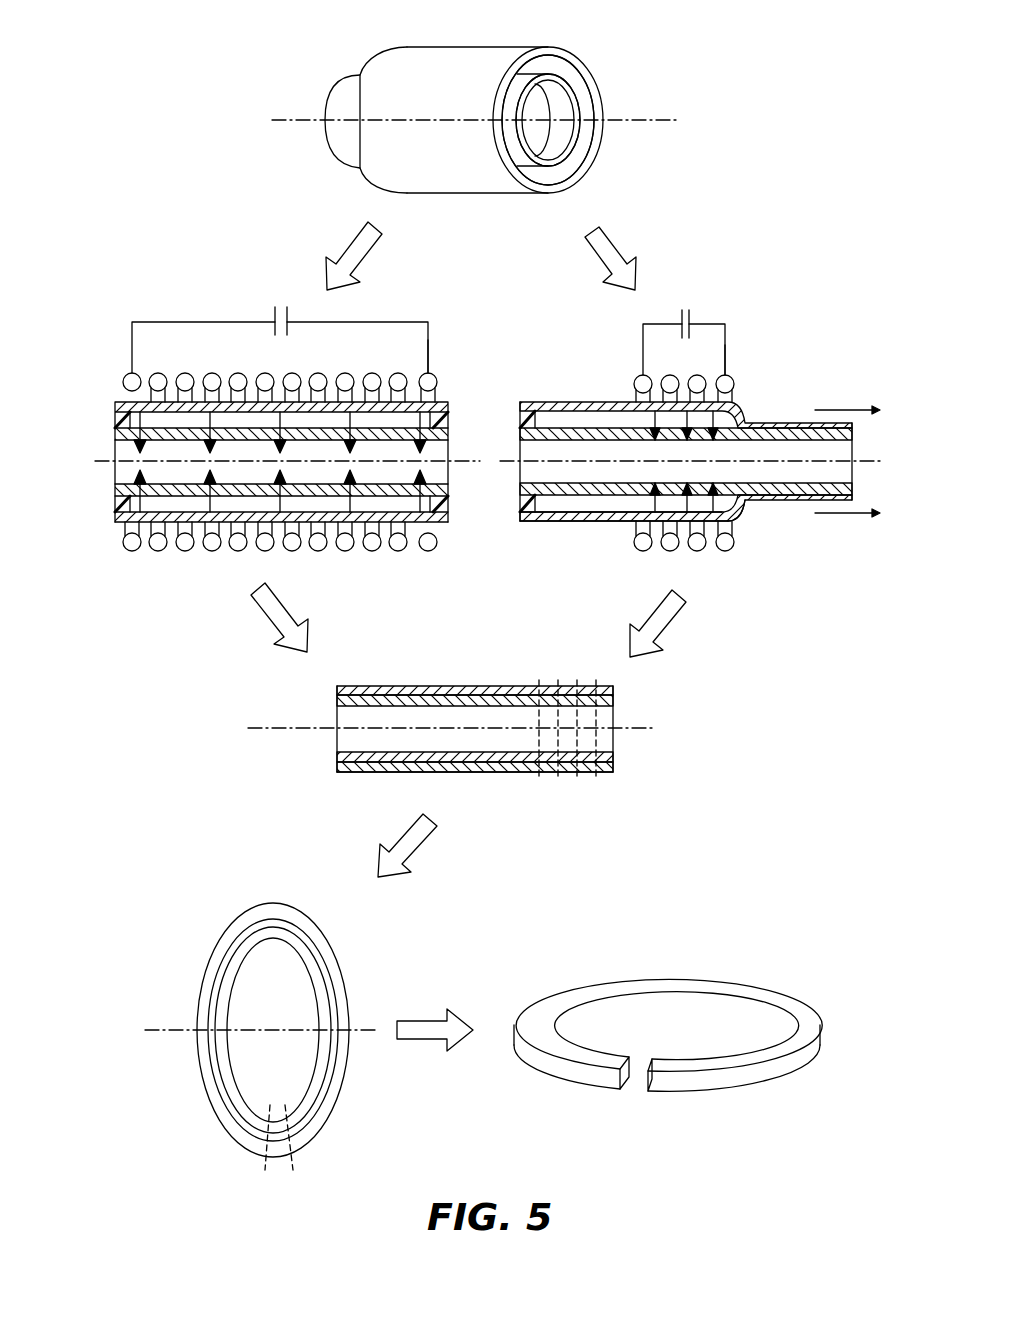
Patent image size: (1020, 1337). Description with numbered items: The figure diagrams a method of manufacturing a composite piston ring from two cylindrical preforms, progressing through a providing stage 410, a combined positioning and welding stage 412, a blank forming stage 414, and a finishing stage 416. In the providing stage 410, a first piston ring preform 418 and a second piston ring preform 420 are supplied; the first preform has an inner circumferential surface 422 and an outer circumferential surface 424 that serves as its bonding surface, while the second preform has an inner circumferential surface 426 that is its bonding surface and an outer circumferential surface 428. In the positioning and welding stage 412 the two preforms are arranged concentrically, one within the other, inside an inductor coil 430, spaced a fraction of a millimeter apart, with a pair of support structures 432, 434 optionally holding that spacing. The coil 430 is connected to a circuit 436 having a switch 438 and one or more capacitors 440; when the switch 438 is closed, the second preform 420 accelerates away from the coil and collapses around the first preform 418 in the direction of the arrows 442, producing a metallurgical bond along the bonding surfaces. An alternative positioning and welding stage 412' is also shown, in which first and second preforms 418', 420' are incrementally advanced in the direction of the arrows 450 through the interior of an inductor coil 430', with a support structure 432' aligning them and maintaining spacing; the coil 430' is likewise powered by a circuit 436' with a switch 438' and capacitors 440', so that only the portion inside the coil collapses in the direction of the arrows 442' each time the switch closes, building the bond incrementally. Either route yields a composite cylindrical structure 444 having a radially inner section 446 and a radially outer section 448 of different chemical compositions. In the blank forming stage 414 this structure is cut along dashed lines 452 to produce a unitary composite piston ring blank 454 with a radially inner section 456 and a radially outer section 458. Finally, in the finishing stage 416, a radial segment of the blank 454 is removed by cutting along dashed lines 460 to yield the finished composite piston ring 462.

The providing stage 410 is at (338, 42).
The outer circumferential surface 428 is at (495, 62).
The second piston ring preform 420 is at (355, 288).
The first piston ring preform 418 is at (363, 285).
The inner circumferential surface 422 is at (558, 146).
The outer circumferential surface 424 is at (516, 154).
The inner circumferential surface 426 is at (553, 178).
The positioning and welding stage 412 is at (392, 414).
The circuit 436 is at (280, 325).
The capacitor 440 is at (263, 301).
The arrows 442 is at (426, 459).
The switch 438 is at (462, 353).
The support structure 434 is at (456, 404).
The support structure 432 is at (257, 462).
The inductor coil 430 is at (272, 485).
The alternative positioning and welding stage 412' is at (672, 413).
The capacitor 440' is at (686, 296).
The circuit 436' is at (701, 329).
The switch 438' is at (759, 361).
The support structure 432' is at (683, 437).
The arrows 450 is at (825, 409).
The first piston ring preform 418' is at (658, 466).
The second piston ring preform 420' is at (601, 532).
The inductor coil 430' is at (644, 474).
The arrows 442' is at (759, 529).
The blank forming stage 414 is at (286, 694).
The composite cylindrical structure 444 is at (418, 686).
The dashed lines 452 is at (538, 722).
The radially inner section 446 is at (338, 757).
The radially outer section 448 is at (338, 768).
The finishing stage 416 is at (218, 877).
The composite piston ring blank 454 is at (270, 905).
The radially inner section 456 is at (318, 961).
The radially outer section 458 is at (218, 981).
The dashed lines 460 is at (292, 1163).
The finished composite piston ring 462 is at (712, 982).